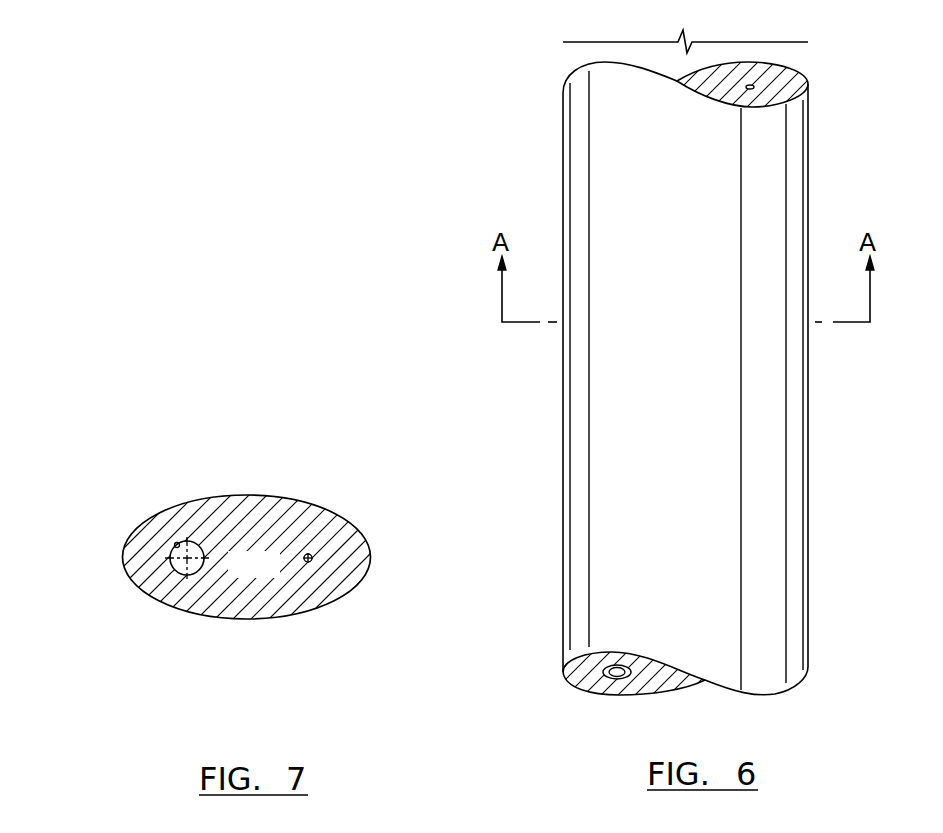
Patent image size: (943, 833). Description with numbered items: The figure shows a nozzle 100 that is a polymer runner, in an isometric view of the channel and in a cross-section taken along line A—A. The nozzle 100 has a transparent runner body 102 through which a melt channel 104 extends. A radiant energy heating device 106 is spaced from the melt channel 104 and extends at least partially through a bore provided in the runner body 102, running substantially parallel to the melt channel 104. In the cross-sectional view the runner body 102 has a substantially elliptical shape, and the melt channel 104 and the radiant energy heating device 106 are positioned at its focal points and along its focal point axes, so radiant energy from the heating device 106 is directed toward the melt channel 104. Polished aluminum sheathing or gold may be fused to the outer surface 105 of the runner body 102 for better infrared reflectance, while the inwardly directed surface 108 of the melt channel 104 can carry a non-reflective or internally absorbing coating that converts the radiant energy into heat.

In FIG. 6, the nozzle 100 is at (543, 155).
In FIG. 7, the nozzle 100 is at (120, 592).
In FIG. 6, the transparent runner body 102 is at (810, 432).
In FIG. 7, the transparent runner body 102 is at (275, 575).
In FIG. 7, the melt channel 104 is at (170, 560).
In FIG. 6, the outer surface 105 is at (810, 652).
In FIG. 7, the outer surface 105 is at (343, 521).
In FIG. 7, the radiant energy heating device 106 is at (313, 562).
In FIG. 7, the inwardly directed surface 108 is at (177, 546).